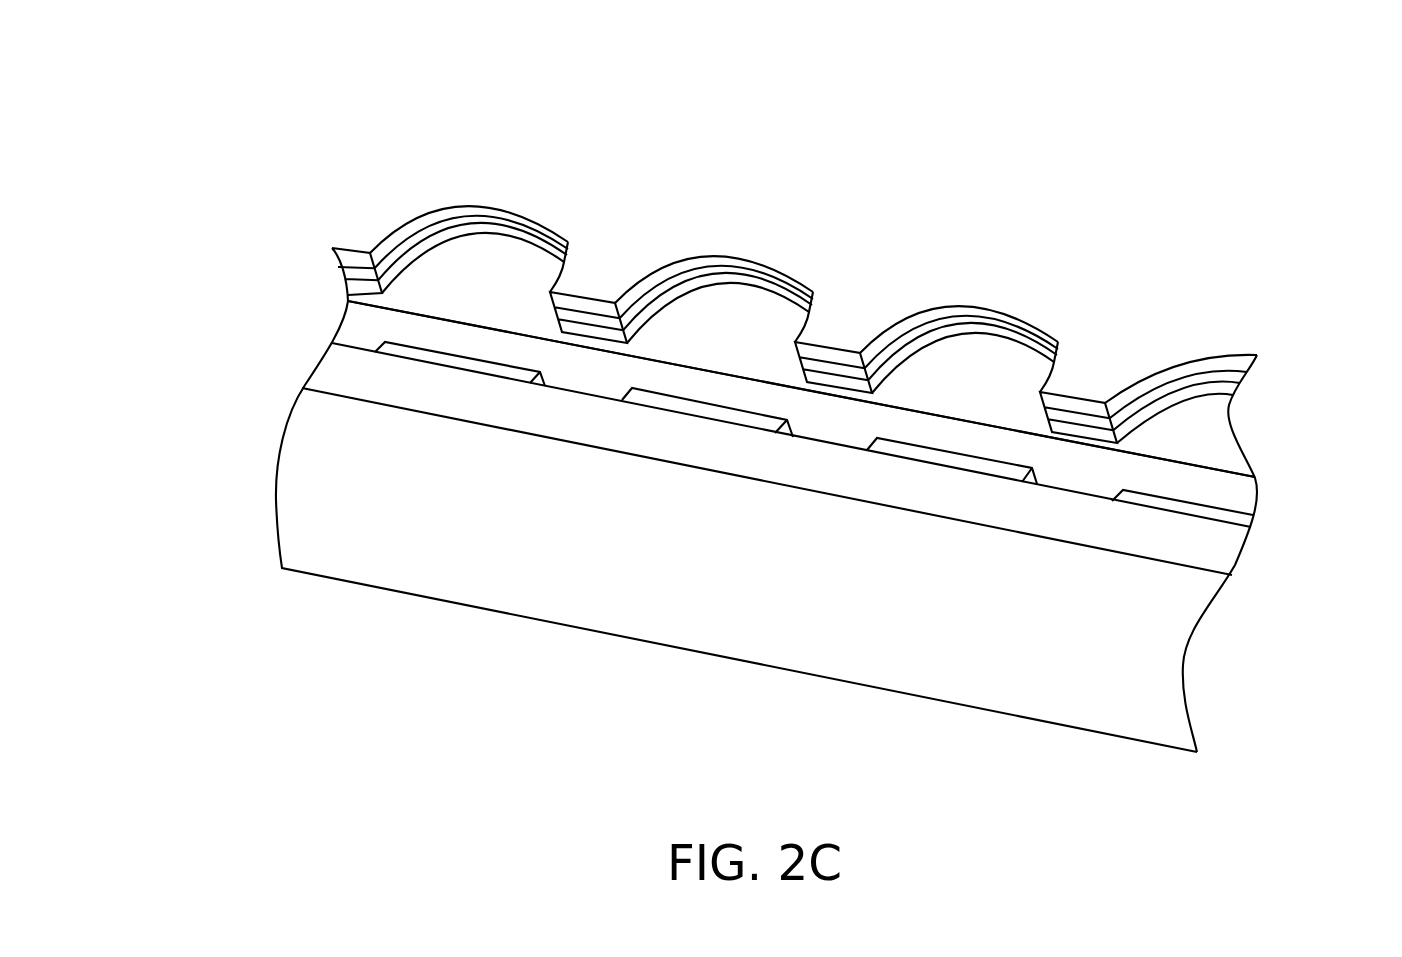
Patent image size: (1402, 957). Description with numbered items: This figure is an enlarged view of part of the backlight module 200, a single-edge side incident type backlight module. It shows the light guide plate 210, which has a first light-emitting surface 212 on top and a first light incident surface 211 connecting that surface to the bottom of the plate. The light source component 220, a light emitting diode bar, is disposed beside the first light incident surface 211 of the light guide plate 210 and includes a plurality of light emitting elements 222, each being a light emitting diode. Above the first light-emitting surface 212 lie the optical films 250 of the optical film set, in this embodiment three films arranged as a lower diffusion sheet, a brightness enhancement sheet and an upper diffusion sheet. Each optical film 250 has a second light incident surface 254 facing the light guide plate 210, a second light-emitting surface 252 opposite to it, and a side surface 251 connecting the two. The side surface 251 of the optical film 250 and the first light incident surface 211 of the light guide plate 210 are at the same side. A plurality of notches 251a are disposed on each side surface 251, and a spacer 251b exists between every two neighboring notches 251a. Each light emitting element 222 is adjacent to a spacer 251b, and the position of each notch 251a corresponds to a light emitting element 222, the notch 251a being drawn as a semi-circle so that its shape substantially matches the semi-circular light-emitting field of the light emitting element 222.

The backlight module 200 is at (143, 72).
The light guide plate 210 is at (1237, 498).
The first light incident surface 211 is at (1147, 472).
The first light-emitting surface 212 is at (515, 253).
The light source component 220 is at (335, 488).
The light emitting element 222 is at (418, 355).
The optical film 250 is at (823, 269).
The side surface 251 is at (1200, 367).
The notch 251a is at (472, 217).
The spacer 251b is at (355, 264).
The second light-emitting surface 252 is at (1098, 330).
The second light incident surface 254 is at (1180, 412).